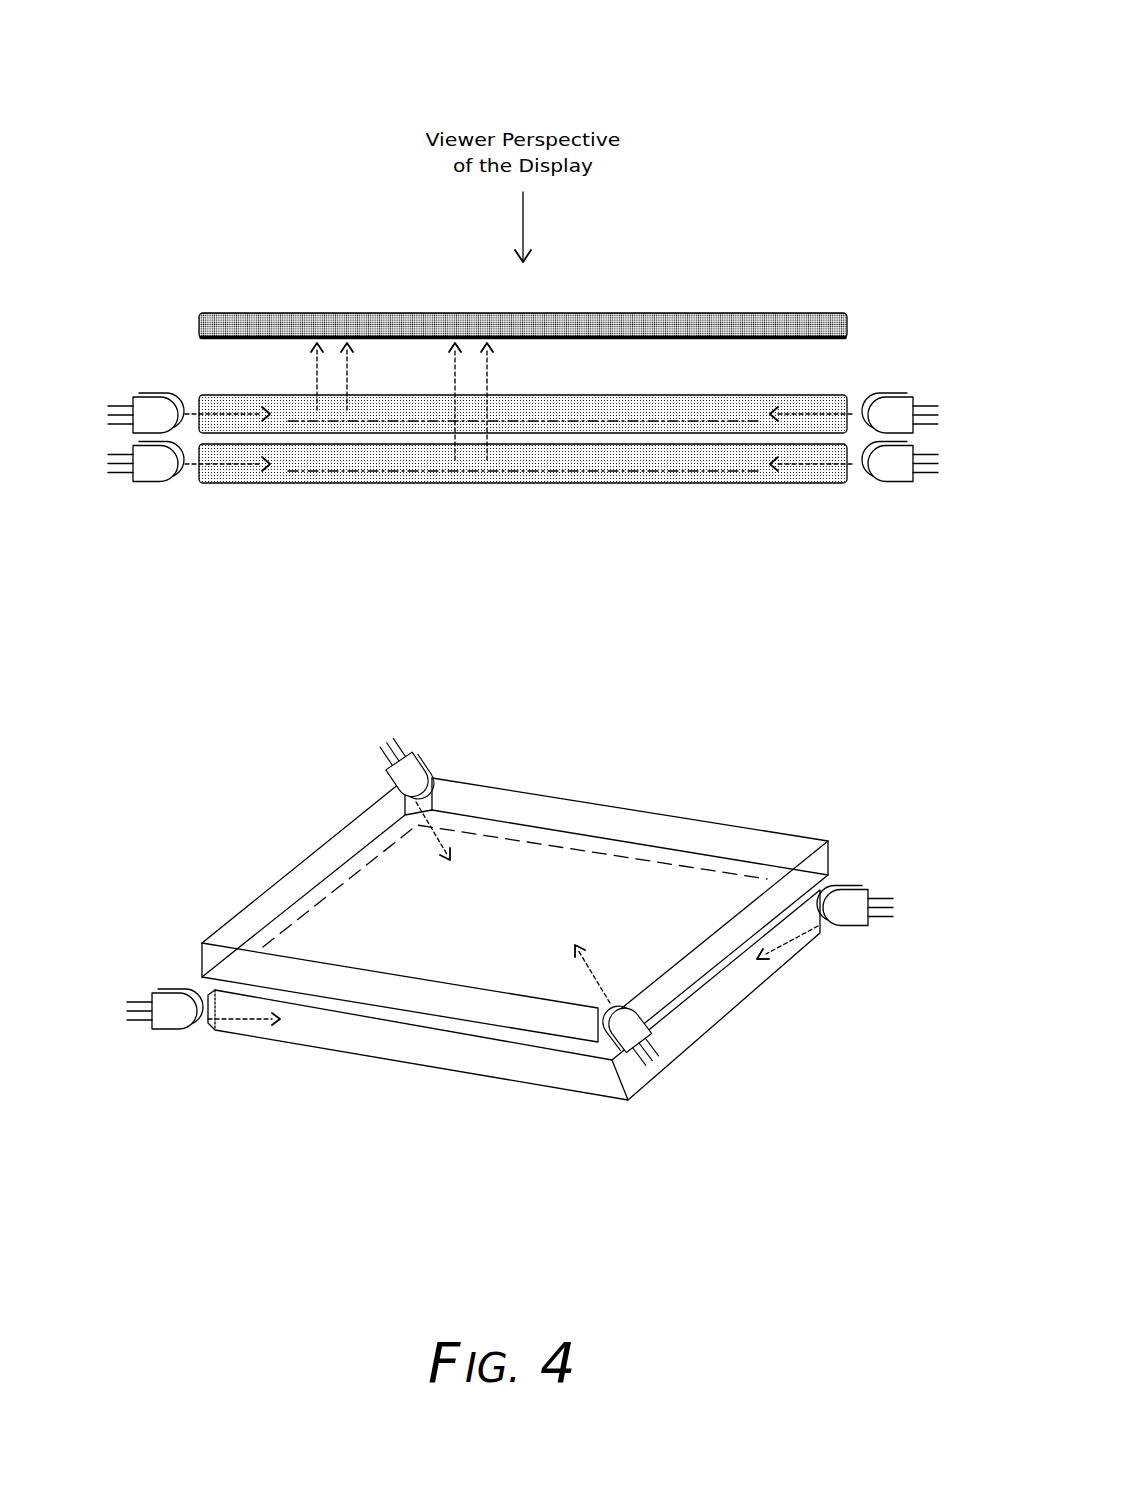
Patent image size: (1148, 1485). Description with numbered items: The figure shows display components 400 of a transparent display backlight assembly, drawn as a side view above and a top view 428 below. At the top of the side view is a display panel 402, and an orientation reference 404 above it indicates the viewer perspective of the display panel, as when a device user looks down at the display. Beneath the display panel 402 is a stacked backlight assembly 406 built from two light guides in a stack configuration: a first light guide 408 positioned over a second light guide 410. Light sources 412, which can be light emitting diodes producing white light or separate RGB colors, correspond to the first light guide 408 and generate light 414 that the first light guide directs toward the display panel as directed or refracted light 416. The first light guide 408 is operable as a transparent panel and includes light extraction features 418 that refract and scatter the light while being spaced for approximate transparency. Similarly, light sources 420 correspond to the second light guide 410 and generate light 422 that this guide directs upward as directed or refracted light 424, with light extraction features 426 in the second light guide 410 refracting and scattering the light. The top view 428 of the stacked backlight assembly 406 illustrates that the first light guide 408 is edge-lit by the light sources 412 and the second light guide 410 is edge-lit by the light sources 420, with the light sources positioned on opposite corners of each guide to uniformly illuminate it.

The display components 400 is at (803, 80).
The display panel 402 is at (672, 312).
The orientation reference 404 is at (548, 227).
The stacked backlight assembly 406 is at (385, 514).
The first light guide 408 is at (748, 395).
The second light guide 410 is at (681, 486).
The light sources 412 is at (127, 386).
The light 414 is at (225, 412).
The directed or refracted light 416 is at (300, 358).
The light extraction features 418 is at (562, 414).
The light sources 420 is at (127, 516).
The light 422 is at (225, 466).
The directed or refracted light 424 is at (440, 358).
The light extraction features 426 is at (610, 476).
The top view 428 is at (652, 746).